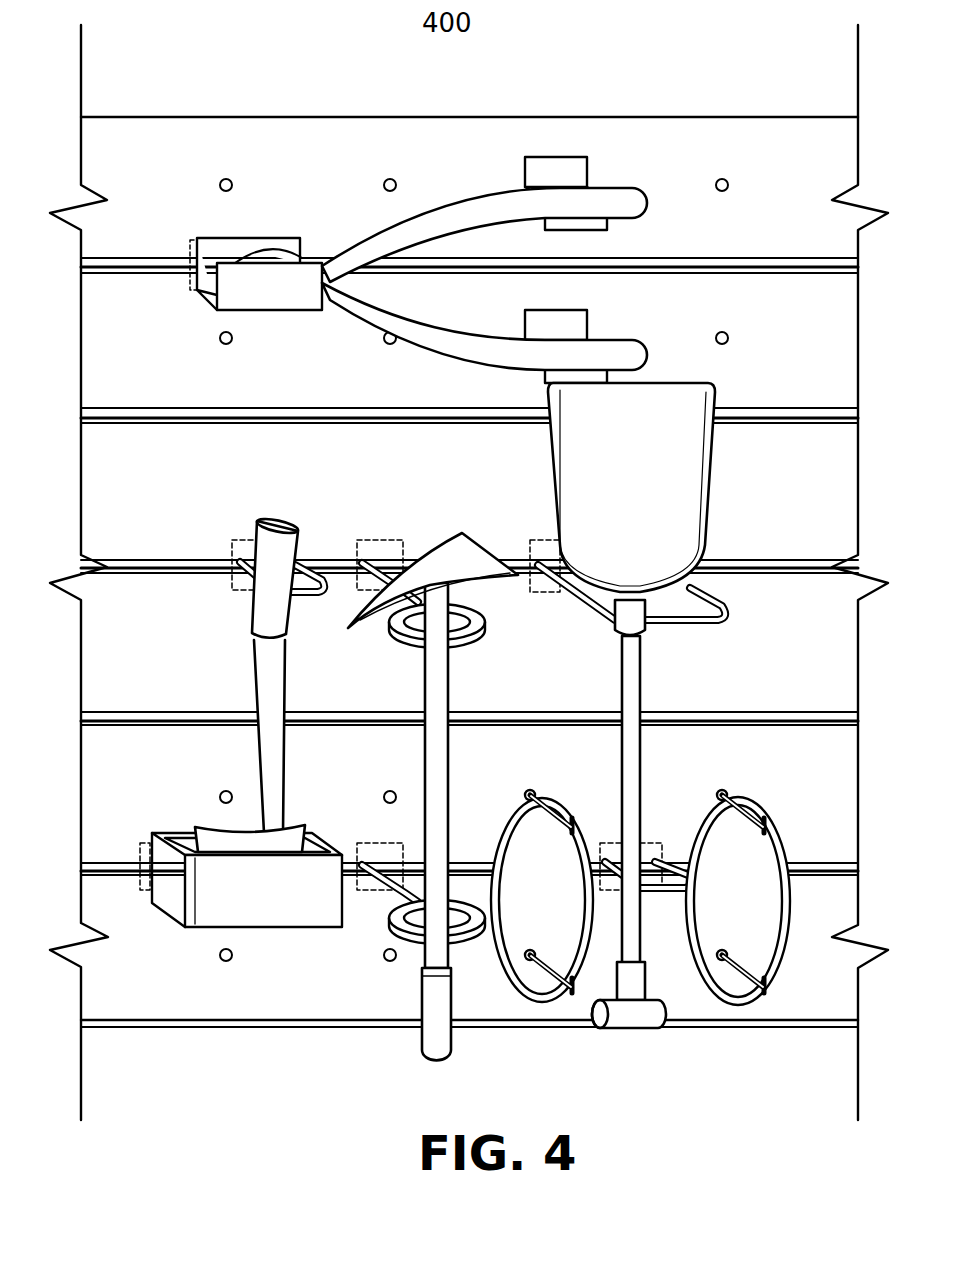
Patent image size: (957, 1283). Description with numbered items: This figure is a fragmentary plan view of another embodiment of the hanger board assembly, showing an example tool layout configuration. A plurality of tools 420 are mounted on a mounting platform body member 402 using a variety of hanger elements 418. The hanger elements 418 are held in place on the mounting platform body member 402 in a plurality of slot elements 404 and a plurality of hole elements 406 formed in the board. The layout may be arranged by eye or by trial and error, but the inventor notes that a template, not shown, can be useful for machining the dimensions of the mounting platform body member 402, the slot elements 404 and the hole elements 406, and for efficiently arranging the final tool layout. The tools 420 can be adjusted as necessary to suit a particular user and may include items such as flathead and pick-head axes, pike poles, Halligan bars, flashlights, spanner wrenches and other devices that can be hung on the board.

The mounting platform body member 402 is at (791, 164).
The slot elements 404 is at (748, 259).
The hole elements 406 is at (221, 179).
The hanger elements 418 is at (212, 300).
The tools 420 is at (468, 200).